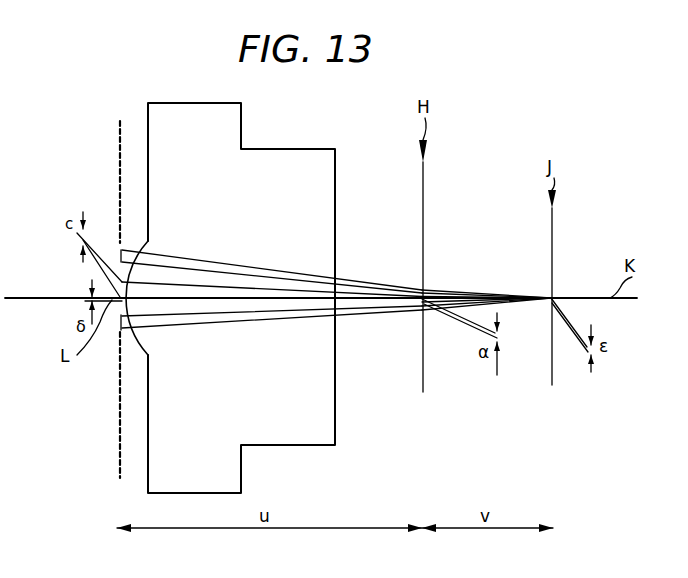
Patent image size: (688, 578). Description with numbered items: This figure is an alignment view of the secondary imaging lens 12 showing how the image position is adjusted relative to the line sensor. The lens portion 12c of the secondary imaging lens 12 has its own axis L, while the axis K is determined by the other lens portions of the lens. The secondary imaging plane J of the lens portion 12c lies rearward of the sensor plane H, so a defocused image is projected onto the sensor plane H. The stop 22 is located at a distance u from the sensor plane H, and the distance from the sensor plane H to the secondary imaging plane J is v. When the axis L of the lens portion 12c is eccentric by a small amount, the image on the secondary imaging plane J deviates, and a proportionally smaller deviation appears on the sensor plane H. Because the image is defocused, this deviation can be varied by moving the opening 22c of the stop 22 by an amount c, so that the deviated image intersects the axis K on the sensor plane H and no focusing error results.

The secondary imaging lens 12 is at (223, 467).
The lens portion 12c is at (138, 323).
The stop 22 is at (120, 470).
The opening 22c is at (118, 302).